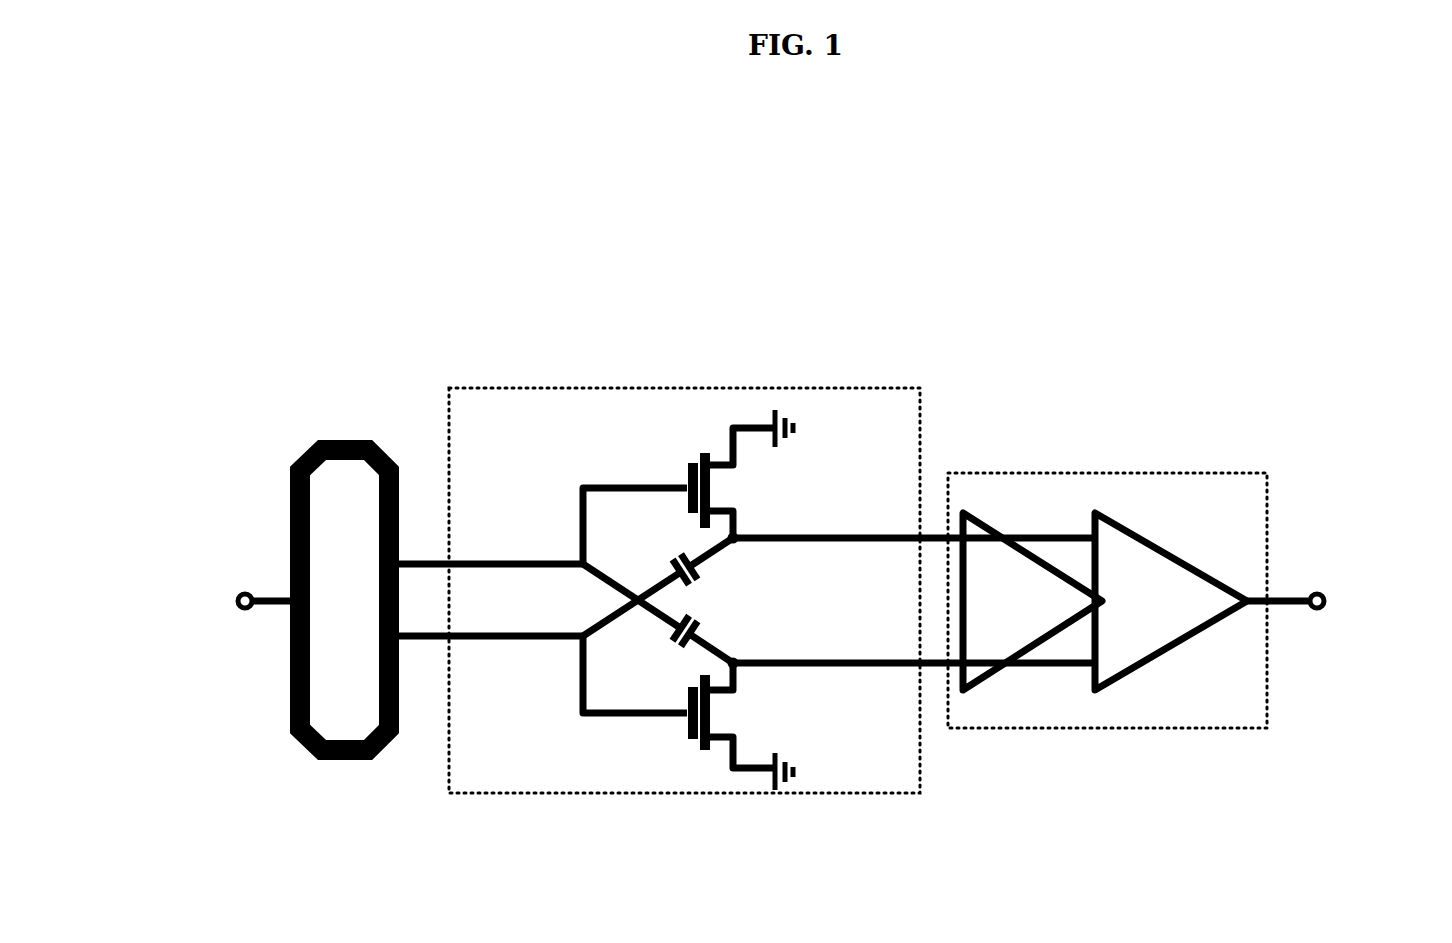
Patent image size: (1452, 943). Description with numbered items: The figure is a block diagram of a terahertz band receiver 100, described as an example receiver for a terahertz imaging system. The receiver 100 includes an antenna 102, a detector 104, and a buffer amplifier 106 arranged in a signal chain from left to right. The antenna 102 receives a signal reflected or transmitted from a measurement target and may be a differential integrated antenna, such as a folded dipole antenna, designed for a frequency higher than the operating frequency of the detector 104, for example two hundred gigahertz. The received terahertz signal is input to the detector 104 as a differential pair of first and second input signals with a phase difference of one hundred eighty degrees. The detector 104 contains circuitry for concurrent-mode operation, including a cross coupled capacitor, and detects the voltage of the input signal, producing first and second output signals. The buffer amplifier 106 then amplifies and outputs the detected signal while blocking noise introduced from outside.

The terahertz band receiver 100 is at (214, 202).
The antenna 102 is at (347, 440).
The detector 104 is at (677, 387).
The buffer amplifier 106 is at (1116, 472).